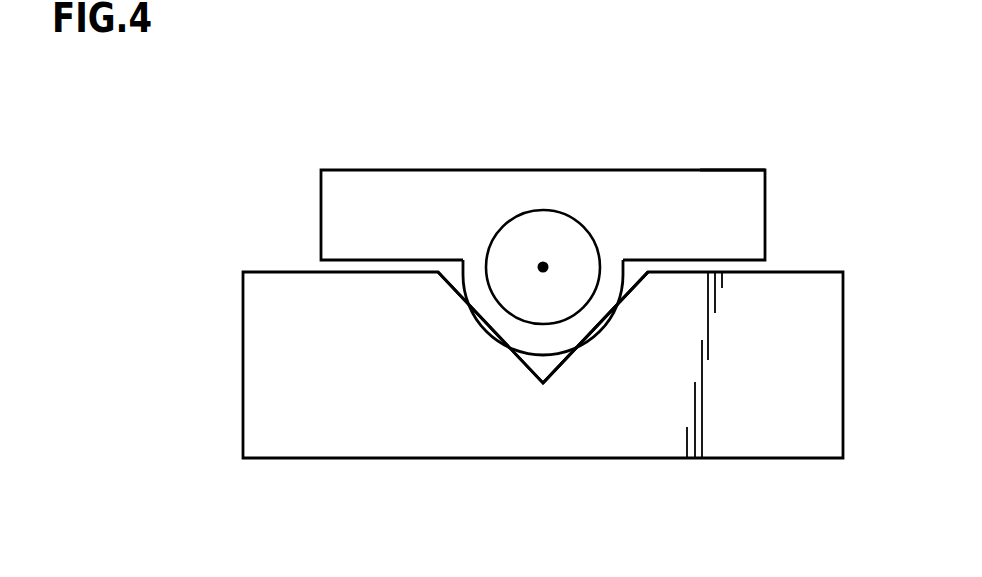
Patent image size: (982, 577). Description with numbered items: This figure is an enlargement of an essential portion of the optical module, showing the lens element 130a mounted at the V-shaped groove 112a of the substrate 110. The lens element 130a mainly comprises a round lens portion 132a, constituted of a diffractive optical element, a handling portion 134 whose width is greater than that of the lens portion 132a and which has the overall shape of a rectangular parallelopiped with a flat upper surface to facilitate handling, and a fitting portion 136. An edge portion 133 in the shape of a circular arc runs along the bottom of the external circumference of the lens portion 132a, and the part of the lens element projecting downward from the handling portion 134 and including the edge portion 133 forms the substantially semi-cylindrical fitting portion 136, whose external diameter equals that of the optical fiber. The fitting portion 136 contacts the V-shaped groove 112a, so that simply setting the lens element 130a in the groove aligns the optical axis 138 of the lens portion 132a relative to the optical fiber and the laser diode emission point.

The substrate 110 is at (770, 459).
The V-shaped groove 112a is at (547, 358).
The lens element 130a is at (745, 171).
The lens portion 132a is at (515, 243).
The edge portion 133 is at (485, 300).
The handling portion 134 is at (343, 176).
The fitting portion 136 is at (527, 347).
The optical axis 138 is at (548, 262).